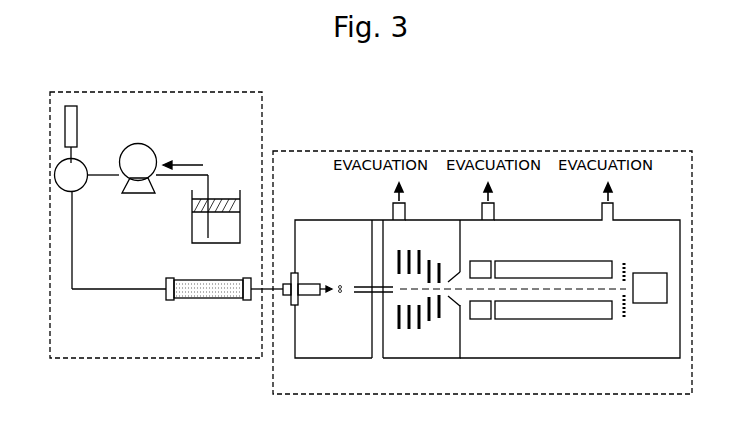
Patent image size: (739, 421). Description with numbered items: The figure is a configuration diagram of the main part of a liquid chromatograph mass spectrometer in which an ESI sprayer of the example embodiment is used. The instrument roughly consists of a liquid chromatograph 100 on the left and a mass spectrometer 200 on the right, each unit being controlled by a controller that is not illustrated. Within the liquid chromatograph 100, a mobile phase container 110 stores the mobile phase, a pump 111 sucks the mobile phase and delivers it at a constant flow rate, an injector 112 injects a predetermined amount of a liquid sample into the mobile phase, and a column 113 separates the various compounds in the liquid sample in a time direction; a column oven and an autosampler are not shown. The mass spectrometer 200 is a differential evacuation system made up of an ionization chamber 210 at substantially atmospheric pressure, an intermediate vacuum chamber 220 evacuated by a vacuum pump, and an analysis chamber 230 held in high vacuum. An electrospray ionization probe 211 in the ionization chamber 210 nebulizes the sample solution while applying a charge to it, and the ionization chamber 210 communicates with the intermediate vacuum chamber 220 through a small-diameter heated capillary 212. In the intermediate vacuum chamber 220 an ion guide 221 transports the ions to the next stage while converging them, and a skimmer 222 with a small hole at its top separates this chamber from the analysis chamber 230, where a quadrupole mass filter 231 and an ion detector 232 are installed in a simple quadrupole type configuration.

The liquid chromatograph 100 is at (212, 91).
The mobile phase container 110 is at (192, 232).
The pump 111 is at (137, 194).
The injector 112 is at (84, 189).
The column 113 is at (198, 302).
The mass spectrometer 200 is at (545, 150).
The ionization chamber 210 is at (346, 348).
The electrospray ionization probe 211 is at (304, 297).
The heated capillary 212 is at (369, 281).
The intermediate vacuum chamber 220 is at (411, 348).
The ion guide 221 is at (424, 253).
The skimmer 222 is at (452, 300).
The analysis chamber 230 is at (487, 348).
The quadrupole mass filter 231 is at (548, 259).
The ion detector 232 is at (653, 273).